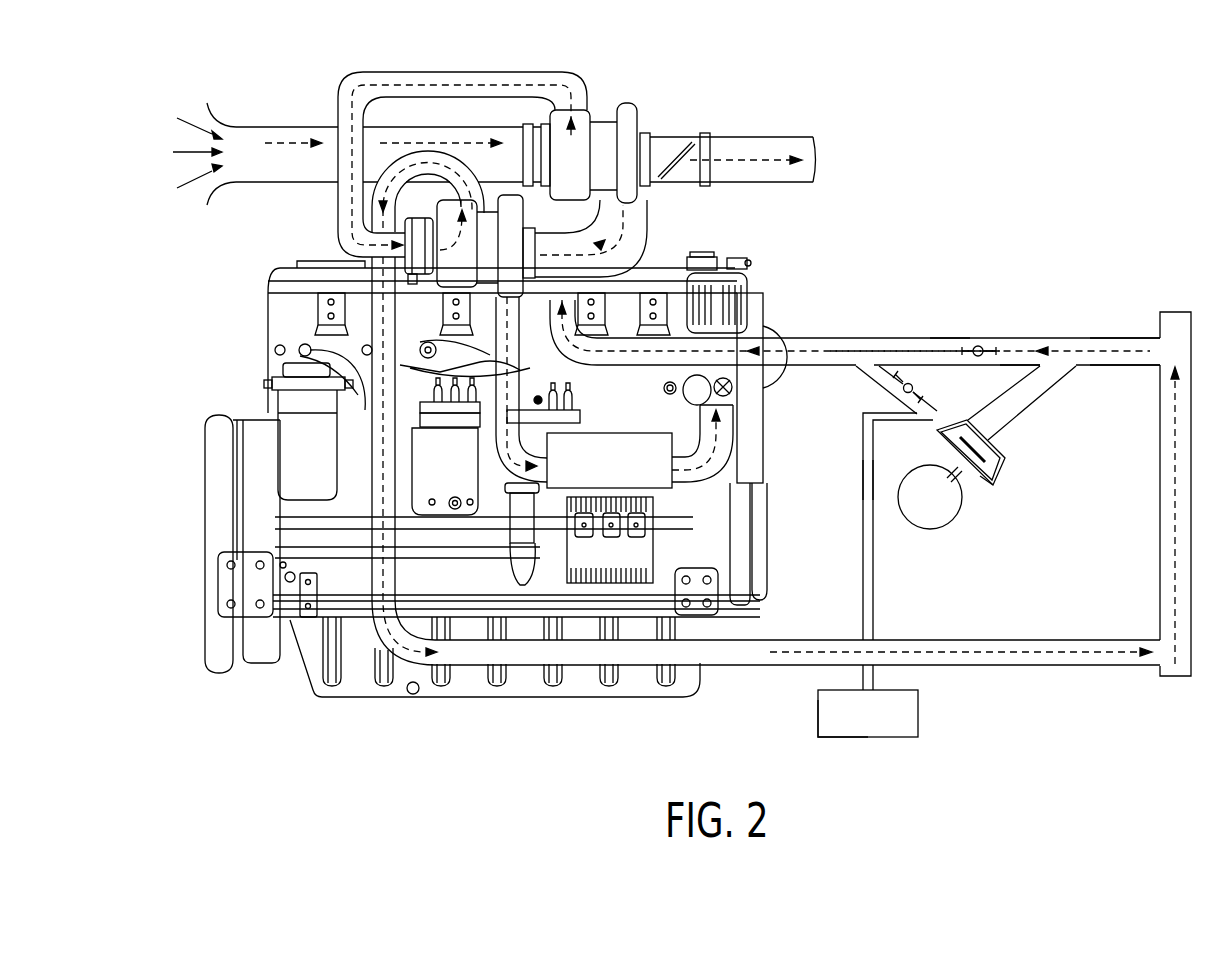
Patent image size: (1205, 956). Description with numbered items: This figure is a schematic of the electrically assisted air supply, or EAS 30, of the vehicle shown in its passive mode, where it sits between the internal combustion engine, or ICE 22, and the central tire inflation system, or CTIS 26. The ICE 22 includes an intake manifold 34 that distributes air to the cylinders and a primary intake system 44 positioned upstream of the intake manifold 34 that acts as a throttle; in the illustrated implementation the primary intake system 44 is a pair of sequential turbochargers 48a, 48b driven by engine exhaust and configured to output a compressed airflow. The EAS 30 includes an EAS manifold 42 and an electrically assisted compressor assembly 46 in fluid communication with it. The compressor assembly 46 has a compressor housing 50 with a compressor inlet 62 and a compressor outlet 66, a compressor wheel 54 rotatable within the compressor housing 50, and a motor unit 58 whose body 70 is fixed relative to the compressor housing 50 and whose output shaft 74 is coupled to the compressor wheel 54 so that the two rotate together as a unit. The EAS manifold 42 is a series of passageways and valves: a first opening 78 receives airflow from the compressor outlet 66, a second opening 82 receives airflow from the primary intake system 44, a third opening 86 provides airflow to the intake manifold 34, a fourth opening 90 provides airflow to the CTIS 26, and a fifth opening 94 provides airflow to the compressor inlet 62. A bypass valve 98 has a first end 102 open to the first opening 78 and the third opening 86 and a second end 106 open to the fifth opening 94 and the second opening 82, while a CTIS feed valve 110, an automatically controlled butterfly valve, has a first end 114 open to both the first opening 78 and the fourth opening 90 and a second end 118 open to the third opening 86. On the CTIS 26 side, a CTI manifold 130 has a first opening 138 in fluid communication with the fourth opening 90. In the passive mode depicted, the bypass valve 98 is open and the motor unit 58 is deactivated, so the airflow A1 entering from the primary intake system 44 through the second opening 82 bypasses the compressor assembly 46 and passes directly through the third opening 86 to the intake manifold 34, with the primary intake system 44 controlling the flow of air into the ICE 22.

The ICE 22 is at (232, 488).
The CTIS 26 is at (908, 712).
The EAS 30 is at (1045, 265).
The intake manifold 34 is at (617, 345).
The EAS manifold 42 is at (1112, 340).
The primary intake system 44 is at (620, 80).
The electrically assisted compressor assembly 46 is at (990, 488).
The turbocharger 48a is at (627, 113).
The turbocharger 48b is at (490, 223).
The compressor housing 50 is at (1000, 472).
The compressor wheel 54 is at (974, 428).
The motor unit 58 is at (958, 519).
The compressor inlet 62 is at (1000, 447).
The compressor outlet 66 is at (974, 346).
The body 70 is at (905, 508).
The output shaft 74 is at (958, 466).
The first opening 78 is at (945, 420).
The second opening 82 is at (1158, 338).
The third opening 86 is at (760, 360).
The fourth opening 90 is at (862, 690).
The fifth opening 94 is at (992, 433).
The bypass valve 98 is at (983, 347).
The first end 102 is at (953, 340).
The second end 106 is at (1007, 348).
The CTIS feed valve 110 is at (860, 368).
The first end 114 is at (865, 478).
The second end 118 is at (903, 381).
The CTI manifold 130 is at (845, 728).
The first opening 138 is at (875, 690).
The airflow A1 is at (821, 362).